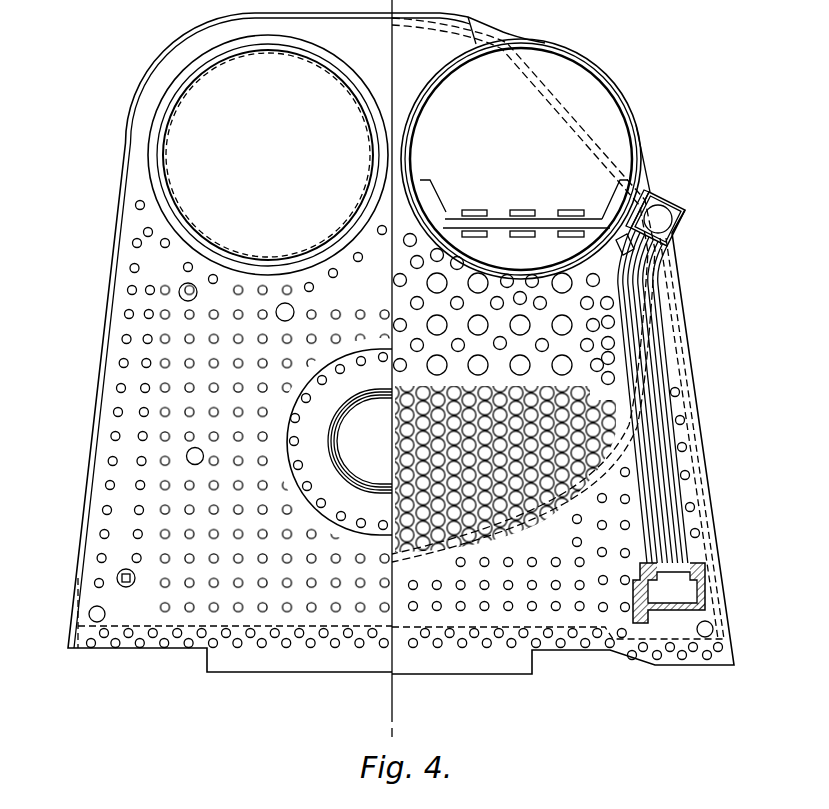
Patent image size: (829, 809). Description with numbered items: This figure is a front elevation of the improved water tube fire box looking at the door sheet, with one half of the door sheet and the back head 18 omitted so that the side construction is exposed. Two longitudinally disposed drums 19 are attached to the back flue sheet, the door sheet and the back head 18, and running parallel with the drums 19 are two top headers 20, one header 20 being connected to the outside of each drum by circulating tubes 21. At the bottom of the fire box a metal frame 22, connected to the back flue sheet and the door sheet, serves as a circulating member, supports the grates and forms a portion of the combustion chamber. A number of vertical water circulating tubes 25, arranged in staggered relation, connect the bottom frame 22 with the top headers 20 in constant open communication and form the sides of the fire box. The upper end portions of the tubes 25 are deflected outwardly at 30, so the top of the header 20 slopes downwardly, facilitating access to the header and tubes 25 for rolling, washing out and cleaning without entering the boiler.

The back head 18 is at (93, 554).
The drums 19 is at (394, 157).
The top header 20 is at (688, 220).
The circulating tubes 21 is at (632, 212).
The metal frame 22 is at (708, 588).
The vertical water circulating tubes 25 is at (646, 461).
The outwardly deflected upper end portions 30 is at (628, 260).